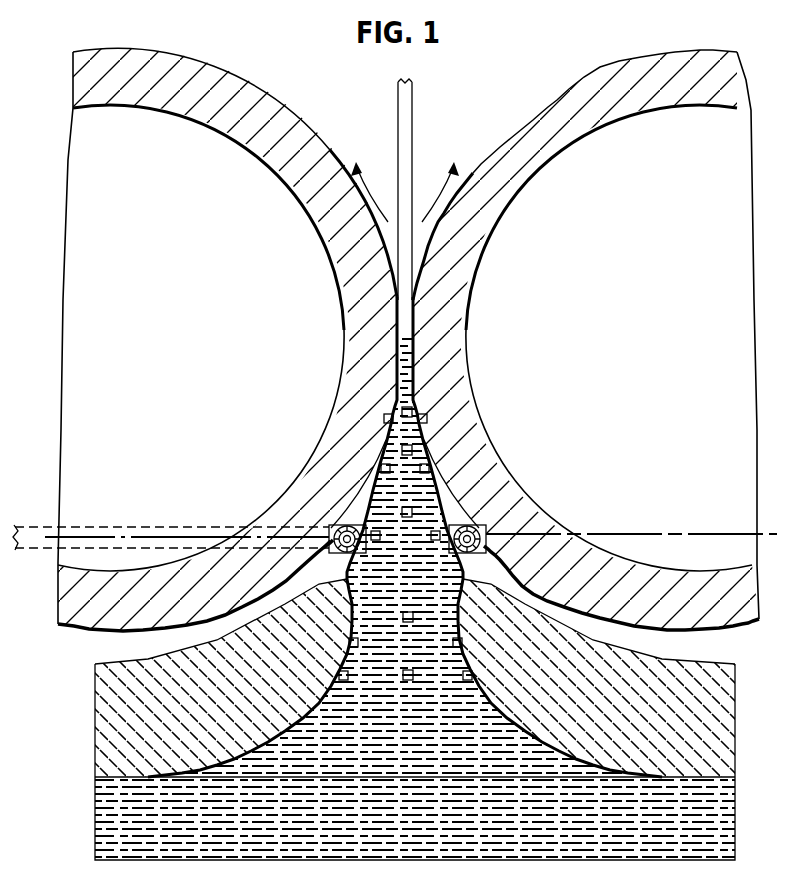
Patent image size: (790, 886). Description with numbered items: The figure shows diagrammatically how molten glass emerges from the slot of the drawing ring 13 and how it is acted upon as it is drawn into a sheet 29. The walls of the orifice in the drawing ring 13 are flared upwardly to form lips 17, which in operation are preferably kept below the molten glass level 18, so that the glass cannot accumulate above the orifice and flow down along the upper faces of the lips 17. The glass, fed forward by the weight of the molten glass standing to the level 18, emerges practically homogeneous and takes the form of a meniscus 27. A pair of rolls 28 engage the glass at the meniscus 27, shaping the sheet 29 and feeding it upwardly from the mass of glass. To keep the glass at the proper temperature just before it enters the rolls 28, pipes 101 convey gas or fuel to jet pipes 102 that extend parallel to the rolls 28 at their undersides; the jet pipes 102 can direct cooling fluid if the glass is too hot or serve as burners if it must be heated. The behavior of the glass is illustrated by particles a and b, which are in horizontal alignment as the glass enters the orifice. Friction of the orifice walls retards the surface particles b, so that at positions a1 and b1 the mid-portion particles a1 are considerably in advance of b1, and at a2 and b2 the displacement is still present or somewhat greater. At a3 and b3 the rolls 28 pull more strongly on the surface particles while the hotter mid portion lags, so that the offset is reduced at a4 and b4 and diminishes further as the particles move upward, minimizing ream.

The rolls 28 is at (118, 47).
The sheet strip 29 is at (401, 113).
The drawing ring 13 is at (95, 680).
The lips 17 is at (333, 591).
The molten glass level 18 is at (691, 526).
The meniscus 27 is at (389, 507).
The pipes 101 is at (30, 532).
The jet pipes 102 is at (330, 527).
The particles a is at (417, 675).
The particles b is at (471, 675).
The position a1 is at (414, 618).
The position a2 is at (443, 497).
The position a3 is at (422, 446).
The position a4 is at (424, 413).
The position b1 is at (288, 592).
The position b2 is at (559, 475).
The position b3 is at (519, 421).
The position b4 is at (514, 375).